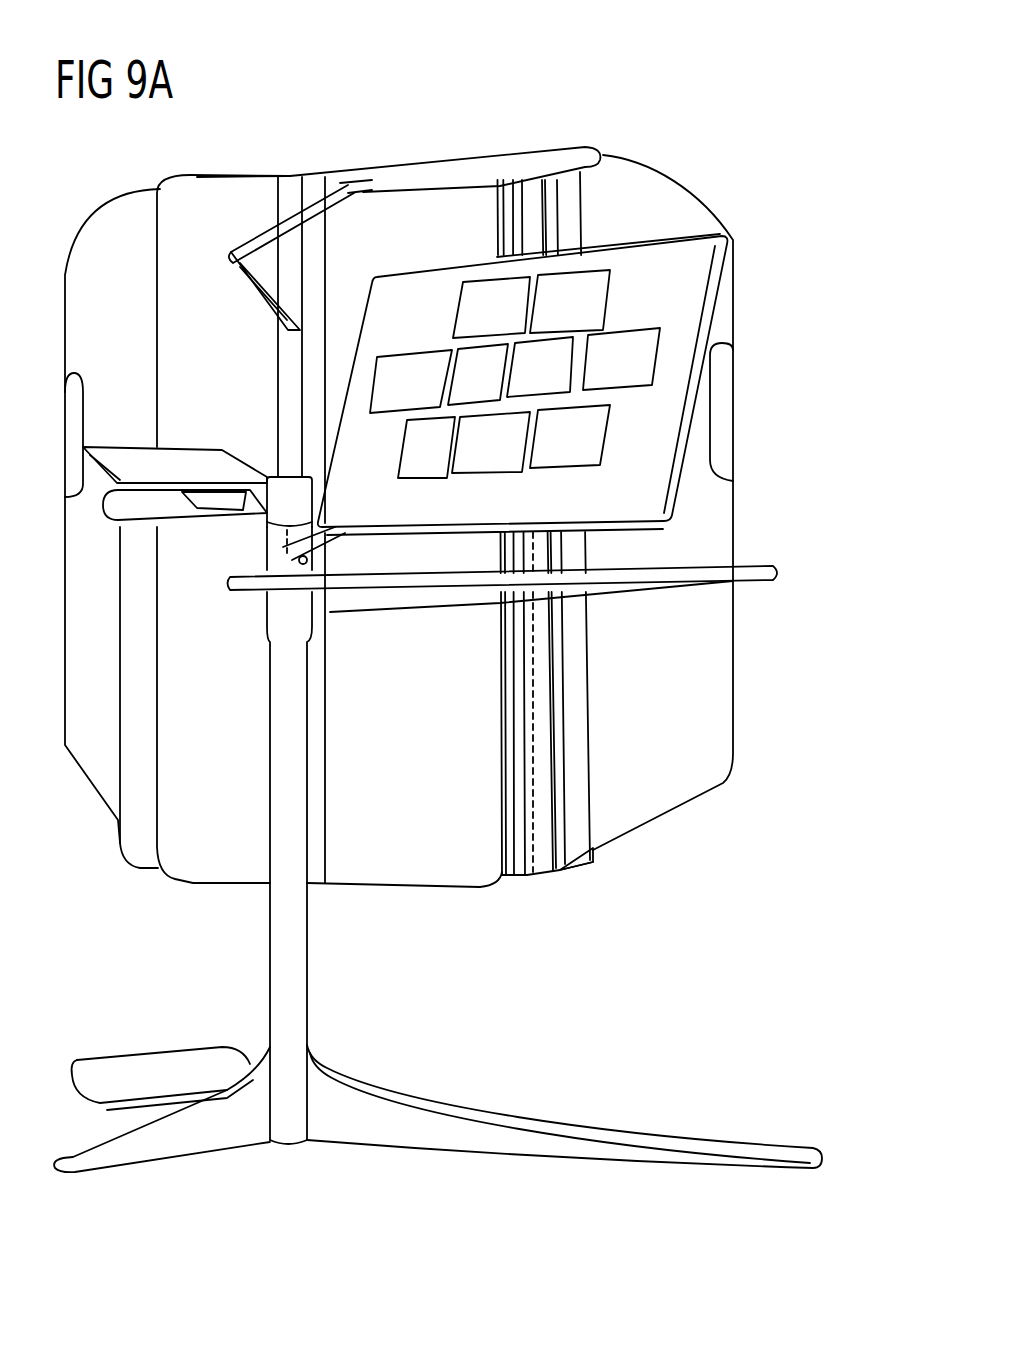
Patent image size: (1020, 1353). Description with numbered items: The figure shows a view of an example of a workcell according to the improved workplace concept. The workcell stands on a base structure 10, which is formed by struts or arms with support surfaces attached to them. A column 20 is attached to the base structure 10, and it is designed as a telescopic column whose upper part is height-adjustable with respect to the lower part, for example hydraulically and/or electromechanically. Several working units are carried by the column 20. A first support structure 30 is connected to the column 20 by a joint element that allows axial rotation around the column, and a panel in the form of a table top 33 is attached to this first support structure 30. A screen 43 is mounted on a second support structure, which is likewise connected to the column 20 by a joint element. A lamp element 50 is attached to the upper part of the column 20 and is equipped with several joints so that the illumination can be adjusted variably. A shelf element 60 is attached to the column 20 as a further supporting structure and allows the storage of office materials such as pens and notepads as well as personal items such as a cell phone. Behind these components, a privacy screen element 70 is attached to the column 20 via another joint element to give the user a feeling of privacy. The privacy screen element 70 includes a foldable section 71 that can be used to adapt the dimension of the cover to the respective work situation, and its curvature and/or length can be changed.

The base structure 10 is at (550, 1104).
The column 20 is at (371, 957).
The first support structure 30 is at (645, 600).
The table top 33 is at (755, 583).
The screen 43 is at (718, 296).
The lamp element 50 is at (581, 156).
The shelf element 60 is at (148, 530).
The privacy screen element 70 is at (663, 814).
The foldable section 71 is at (513, 887).